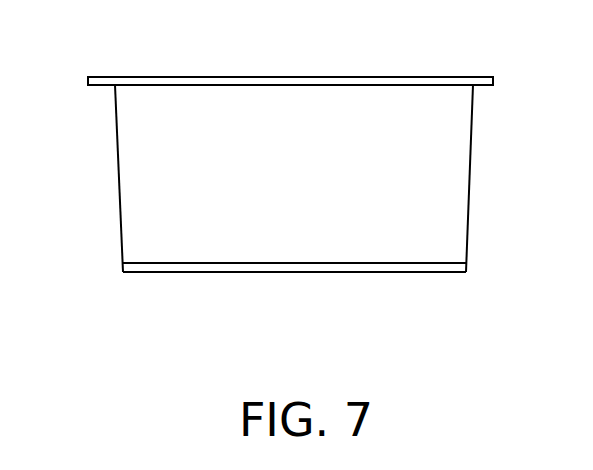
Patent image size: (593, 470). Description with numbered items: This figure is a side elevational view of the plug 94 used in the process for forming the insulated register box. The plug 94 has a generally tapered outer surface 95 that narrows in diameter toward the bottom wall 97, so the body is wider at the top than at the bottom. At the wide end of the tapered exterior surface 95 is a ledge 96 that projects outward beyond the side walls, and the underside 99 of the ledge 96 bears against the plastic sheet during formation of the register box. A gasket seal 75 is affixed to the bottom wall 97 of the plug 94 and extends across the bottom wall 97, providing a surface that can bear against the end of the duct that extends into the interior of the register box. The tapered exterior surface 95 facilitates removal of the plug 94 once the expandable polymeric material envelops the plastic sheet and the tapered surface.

The gasket seal 75 is at (188, 273).
The plug 94 is at (470, 170).
The tapered outer surface 95 is at (118, 173).
The ledge 96 is at (493, 75).
The bottom wall 97 is at (367, 265).
The underside 99 is at (478, 86).